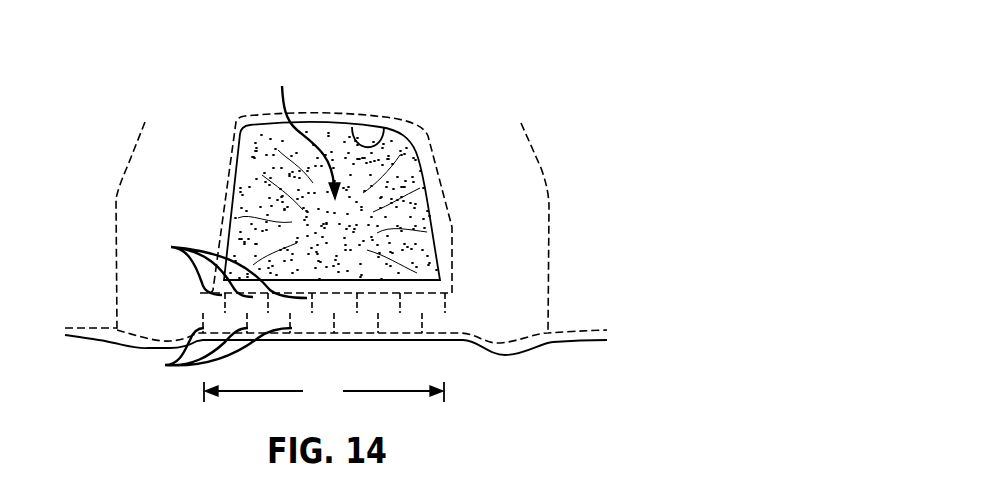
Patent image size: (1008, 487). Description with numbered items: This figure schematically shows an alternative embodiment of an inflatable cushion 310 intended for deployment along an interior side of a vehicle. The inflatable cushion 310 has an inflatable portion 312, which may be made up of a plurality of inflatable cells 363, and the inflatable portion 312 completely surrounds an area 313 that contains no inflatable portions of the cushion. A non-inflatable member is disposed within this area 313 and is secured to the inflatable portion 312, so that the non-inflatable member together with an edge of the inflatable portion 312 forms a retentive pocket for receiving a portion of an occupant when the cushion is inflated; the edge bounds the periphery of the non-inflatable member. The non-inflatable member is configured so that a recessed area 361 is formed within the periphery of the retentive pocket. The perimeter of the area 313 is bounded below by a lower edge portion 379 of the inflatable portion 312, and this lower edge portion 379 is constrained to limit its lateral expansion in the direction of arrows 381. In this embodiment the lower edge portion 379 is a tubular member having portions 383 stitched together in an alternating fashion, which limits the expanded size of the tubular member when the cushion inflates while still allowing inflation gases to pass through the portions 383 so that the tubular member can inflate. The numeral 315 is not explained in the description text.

The inflatable cushion 310 is at (458, 68).
The inflatable portion 312 is at (517, 165).
The area 313 is at (380, 143).
The foam pad insert 315 is at (423, 152).
The recessed area 361 is at (303, 130).
The inflatable cells 363 is at (83, 208).
The lower edge portion 379 is at (412, 313).
The arrows 381 is at (324, 392).
The portions 383 is at (219, 305).